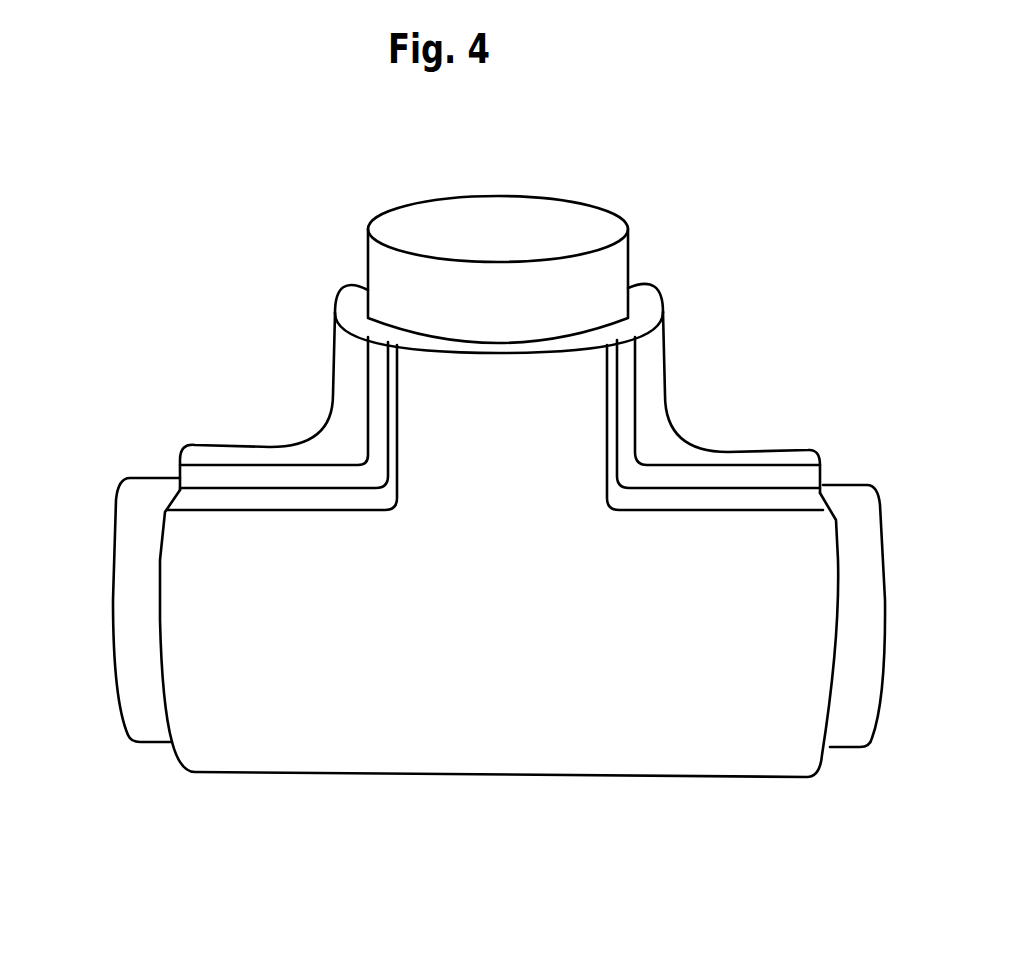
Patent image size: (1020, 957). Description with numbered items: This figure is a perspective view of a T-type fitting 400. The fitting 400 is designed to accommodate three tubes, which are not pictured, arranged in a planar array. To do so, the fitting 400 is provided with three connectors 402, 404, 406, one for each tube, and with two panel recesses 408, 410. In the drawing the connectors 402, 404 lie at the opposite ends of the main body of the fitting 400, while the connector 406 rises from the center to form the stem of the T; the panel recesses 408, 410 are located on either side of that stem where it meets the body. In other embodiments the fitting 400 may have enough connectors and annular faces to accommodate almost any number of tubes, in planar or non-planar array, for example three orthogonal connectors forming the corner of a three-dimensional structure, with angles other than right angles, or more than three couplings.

The T-type fitting 400 is at (487, 785).
The connector 402 is at (118, 591).
The connector 404 is at (885, 585).
The connector 406 is at (368, 253).
The panel recess 408 is at (650, 483).
The panel recess 410 is at (292, 480).